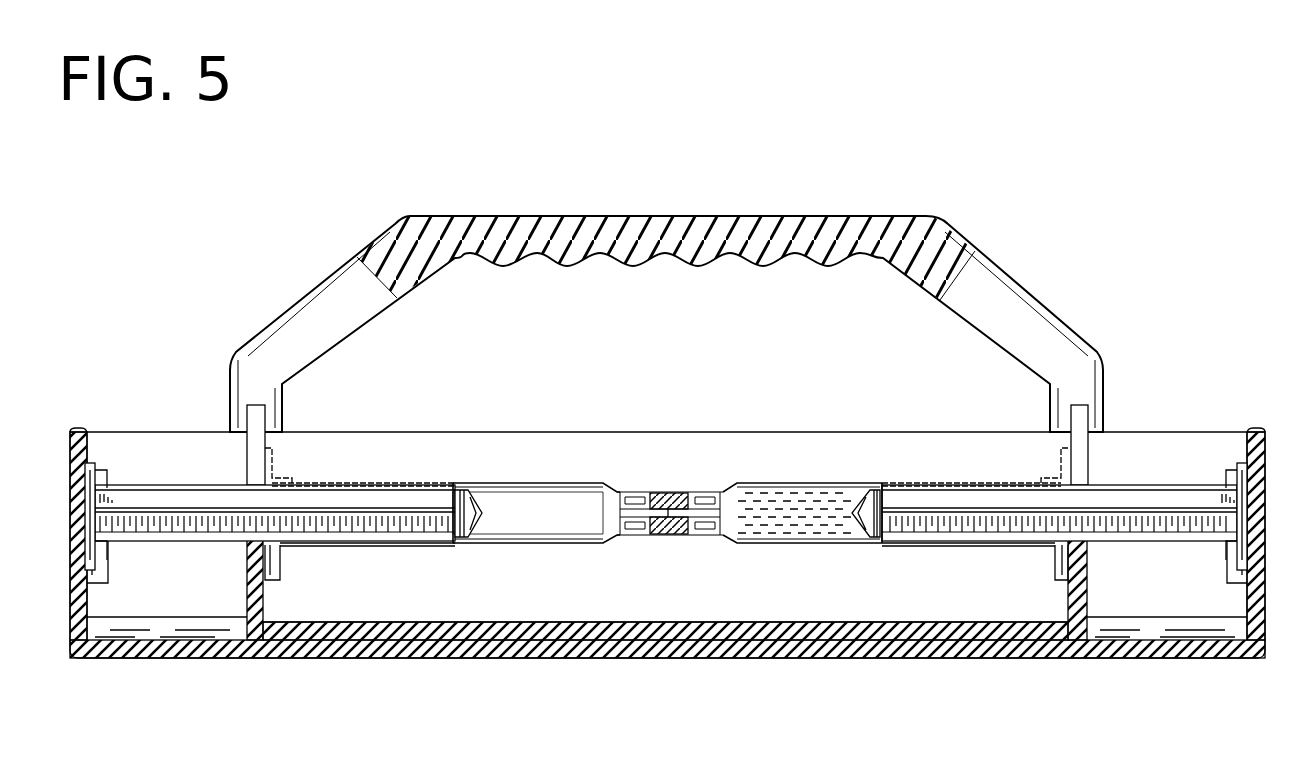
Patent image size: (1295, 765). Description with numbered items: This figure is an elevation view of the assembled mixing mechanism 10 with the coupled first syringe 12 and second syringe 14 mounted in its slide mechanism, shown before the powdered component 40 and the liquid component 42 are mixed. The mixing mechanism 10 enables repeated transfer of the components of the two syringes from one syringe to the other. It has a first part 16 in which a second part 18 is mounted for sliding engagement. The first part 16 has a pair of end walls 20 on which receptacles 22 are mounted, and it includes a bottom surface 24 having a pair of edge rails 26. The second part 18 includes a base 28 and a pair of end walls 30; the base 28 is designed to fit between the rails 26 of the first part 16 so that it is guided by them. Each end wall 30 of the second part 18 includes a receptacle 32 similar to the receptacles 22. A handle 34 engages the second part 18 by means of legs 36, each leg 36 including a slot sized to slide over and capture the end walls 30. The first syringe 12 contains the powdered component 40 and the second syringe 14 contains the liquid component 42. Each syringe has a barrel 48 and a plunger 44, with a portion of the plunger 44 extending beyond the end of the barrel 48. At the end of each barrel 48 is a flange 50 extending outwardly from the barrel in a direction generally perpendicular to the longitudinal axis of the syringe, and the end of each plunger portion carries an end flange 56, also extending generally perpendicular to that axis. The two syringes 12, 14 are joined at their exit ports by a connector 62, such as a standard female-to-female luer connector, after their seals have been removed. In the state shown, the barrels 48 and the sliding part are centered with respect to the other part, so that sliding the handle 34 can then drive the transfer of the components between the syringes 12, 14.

The mixing mechanism 10 is at (1080, 130).
The first syringe 12 is at (550, 482).
The second syringe 14 is at (788, 482).
The first part 16 is at (1262, 428).
The second part 18 is at (1090, 462).
The end walls 20 is at (72, 478).
The receptacles 22 is at (110, 560).
The bottom surface 24 is at (1157, 630).
The edge rails 26 is at (178, 628).
The base 28 is at (672, 622).
The end walls 30 is at (247, 560).
The receptacle 32 is at (278, 565).
The handle 34 is at (800, 212).
The legs 36 is at (1025, 292).
The powdered component 40 is at (563, 515).
The liquid component 42 is at (790, 522).
The plunger 44 is at (478, 532).
The barrel 48 is at (440, 482).
The flange 50 is at (272, 456).
The end flange 56 is at (95, 465).
The connector 62 is at (665, 490).